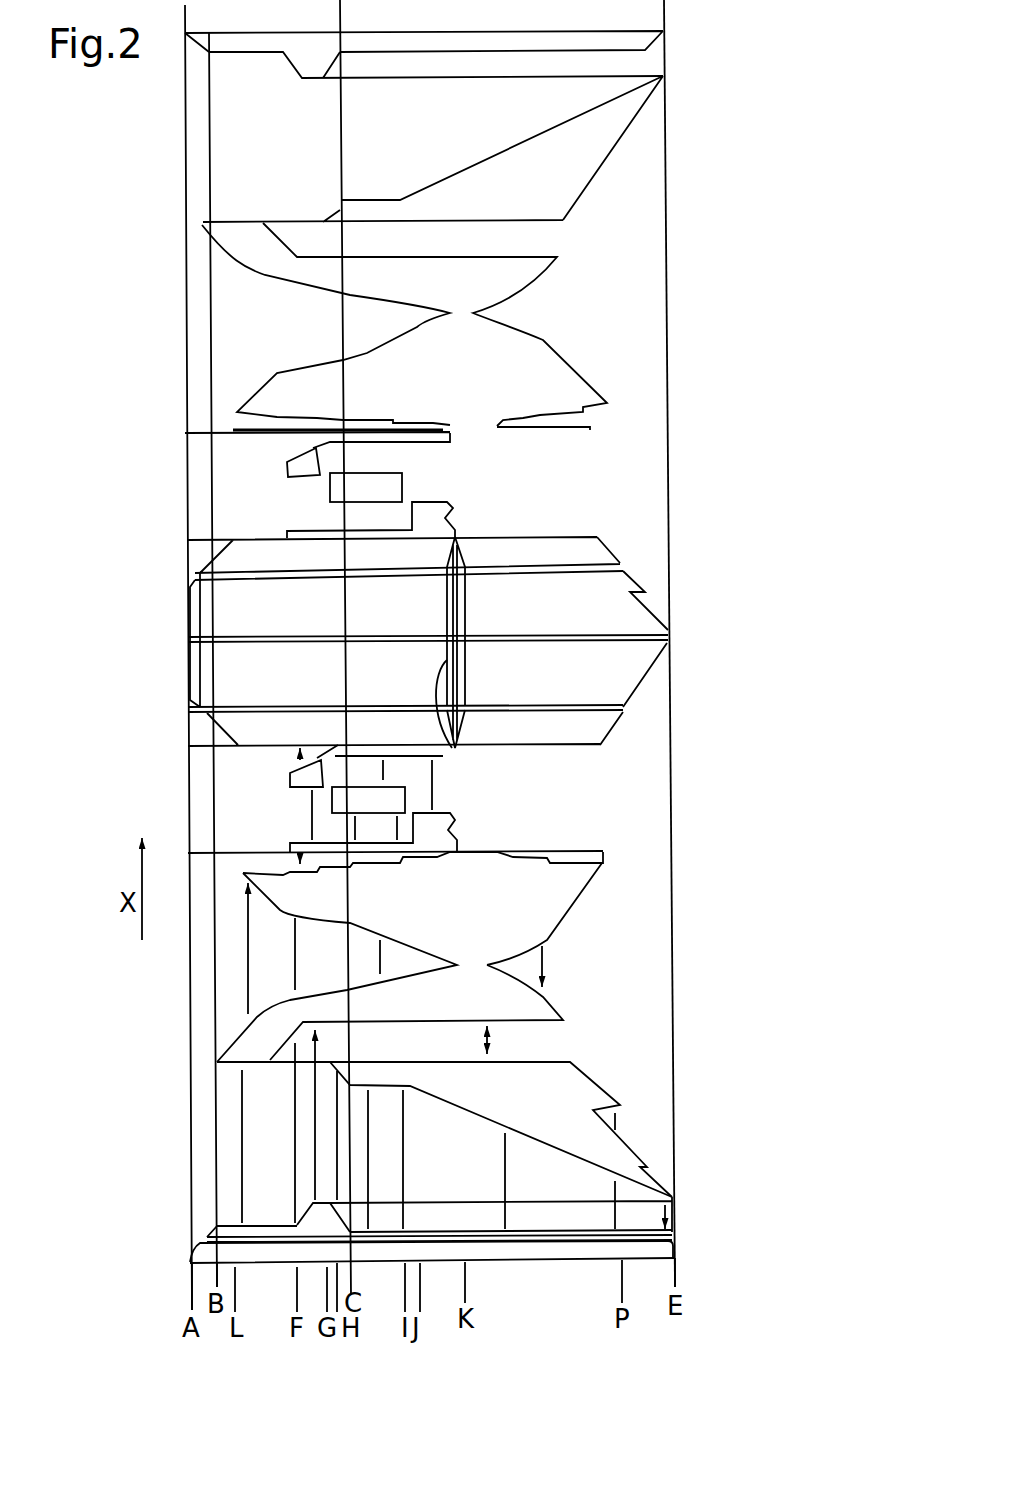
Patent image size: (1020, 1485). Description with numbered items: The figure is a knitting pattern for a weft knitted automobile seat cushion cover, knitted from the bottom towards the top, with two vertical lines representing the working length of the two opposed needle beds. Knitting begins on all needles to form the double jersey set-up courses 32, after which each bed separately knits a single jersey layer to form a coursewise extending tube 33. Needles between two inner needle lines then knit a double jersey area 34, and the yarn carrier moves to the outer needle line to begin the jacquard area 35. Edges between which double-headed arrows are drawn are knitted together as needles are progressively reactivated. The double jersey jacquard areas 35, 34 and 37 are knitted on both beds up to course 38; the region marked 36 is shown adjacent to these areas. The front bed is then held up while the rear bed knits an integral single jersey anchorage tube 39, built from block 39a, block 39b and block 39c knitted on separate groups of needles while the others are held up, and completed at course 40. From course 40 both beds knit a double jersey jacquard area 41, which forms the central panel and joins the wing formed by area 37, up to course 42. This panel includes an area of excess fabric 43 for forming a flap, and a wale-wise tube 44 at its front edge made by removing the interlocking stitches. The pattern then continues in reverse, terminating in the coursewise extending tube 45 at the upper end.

The double jersey set-up courses 32 is at (188, 1262).
The coursewise extending tube 33 is at (208, 1234).
The double jersey area 34 is at (247, 1225).
The jacquard area 35 is at (497, 1102).
The lower constriction section 36 is at (538, 1010).
The double jersey jacquard area 37 is at (550, 917).
The course 38 is at (653, 846).
The anchorage tube 39 is at (466, 792).
The block 39a is at (457, 830).
The block 39b is at (332, 802).
The block 39c is at (290, 780).
The course 40 is at (600, 737).
The double jersey jacquard area 41 is at (637, 660).
The course 42 is at (608, 537).
The area of excess fabric 43 is at (462, 657).
The wale-wise tube 44 is at (188, 628).
The coursewise extending tube 45 is at (483, 30).